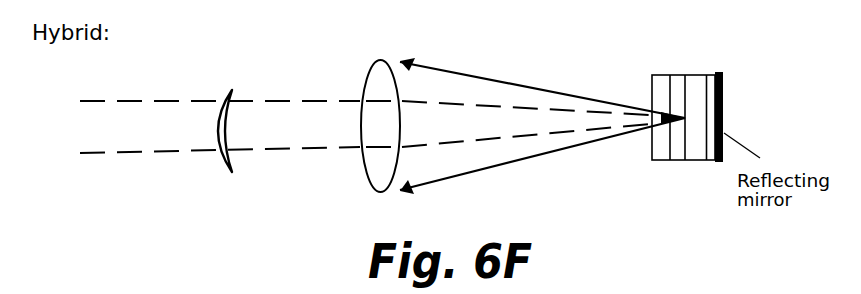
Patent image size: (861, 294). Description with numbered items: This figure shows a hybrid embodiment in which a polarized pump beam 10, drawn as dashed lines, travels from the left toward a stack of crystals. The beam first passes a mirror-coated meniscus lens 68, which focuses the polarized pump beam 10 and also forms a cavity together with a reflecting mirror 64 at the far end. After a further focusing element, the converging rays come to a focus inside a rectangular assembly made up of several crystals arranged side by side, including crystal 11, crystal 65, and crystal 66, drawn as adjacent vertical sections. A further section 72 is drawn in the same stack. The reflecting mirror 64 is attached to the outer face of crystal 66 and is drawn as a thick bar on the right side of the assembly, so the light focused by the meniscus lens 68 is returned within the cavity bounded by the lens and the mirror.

The polarized pump beam 10 is at (154, 118).
The mirror-coated meniscus lens 68 is at (225, 87).
The crystal 11 is at (661, 74).
The device layer 72 is at (673, 161).
The crystal 65 is at (692, 74).
The crystal 66 is at (712, 161).
The reflecting mirror 64 is at (724, 97).